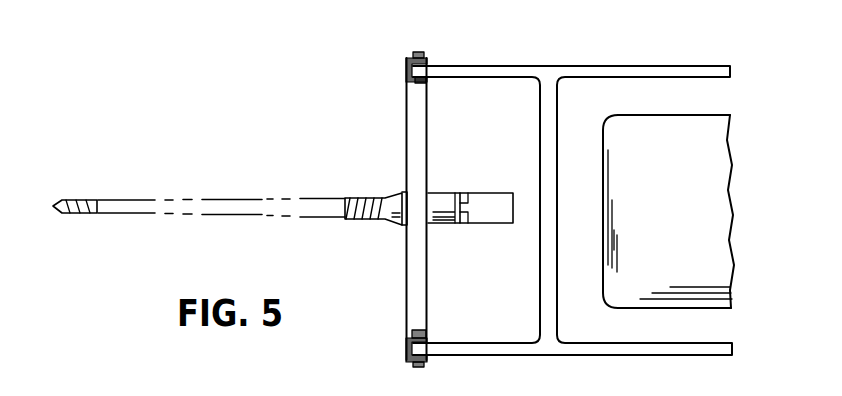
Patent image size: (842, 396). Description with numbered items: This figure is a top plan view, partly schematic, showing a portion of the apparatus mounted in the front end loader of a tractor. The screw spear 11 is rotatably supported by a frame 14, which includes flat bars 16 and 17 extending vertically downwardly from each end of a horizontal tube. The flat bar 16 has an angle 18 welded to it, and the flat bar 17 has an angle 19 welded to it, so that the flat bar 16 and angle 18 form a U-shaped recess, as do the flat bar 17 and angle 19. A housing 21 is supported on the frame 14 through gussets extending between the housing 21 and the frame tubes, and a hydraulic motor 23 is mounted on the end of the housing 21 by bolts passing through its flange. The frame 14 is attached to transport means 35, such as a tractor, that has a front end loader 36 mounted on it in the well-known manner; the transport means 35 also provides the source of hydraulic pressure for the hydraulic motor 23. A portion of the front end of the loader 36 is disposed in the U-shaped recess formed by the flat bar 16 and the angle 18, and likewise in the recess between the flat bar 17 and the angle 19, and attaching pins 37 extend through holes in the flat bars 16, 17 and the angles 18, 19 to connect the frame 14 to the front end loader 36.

The screw spear 11 is at (362, 200).
The frame 14 is at (406, 127).
The flat bar 16 is at (410, 364).
The flat bar 17 is at (424, 56).
The angle 18 is at (425, 330).
The angle 19 is at (424, 84).
The housing 21 is at (445, 192).
The hydraulic motor 23 is at (484, 193).
The transport means 35 is at (621, 114).
The front end loader 36 is at (495, 356).
The attaching pins 37 is at (411, 56).